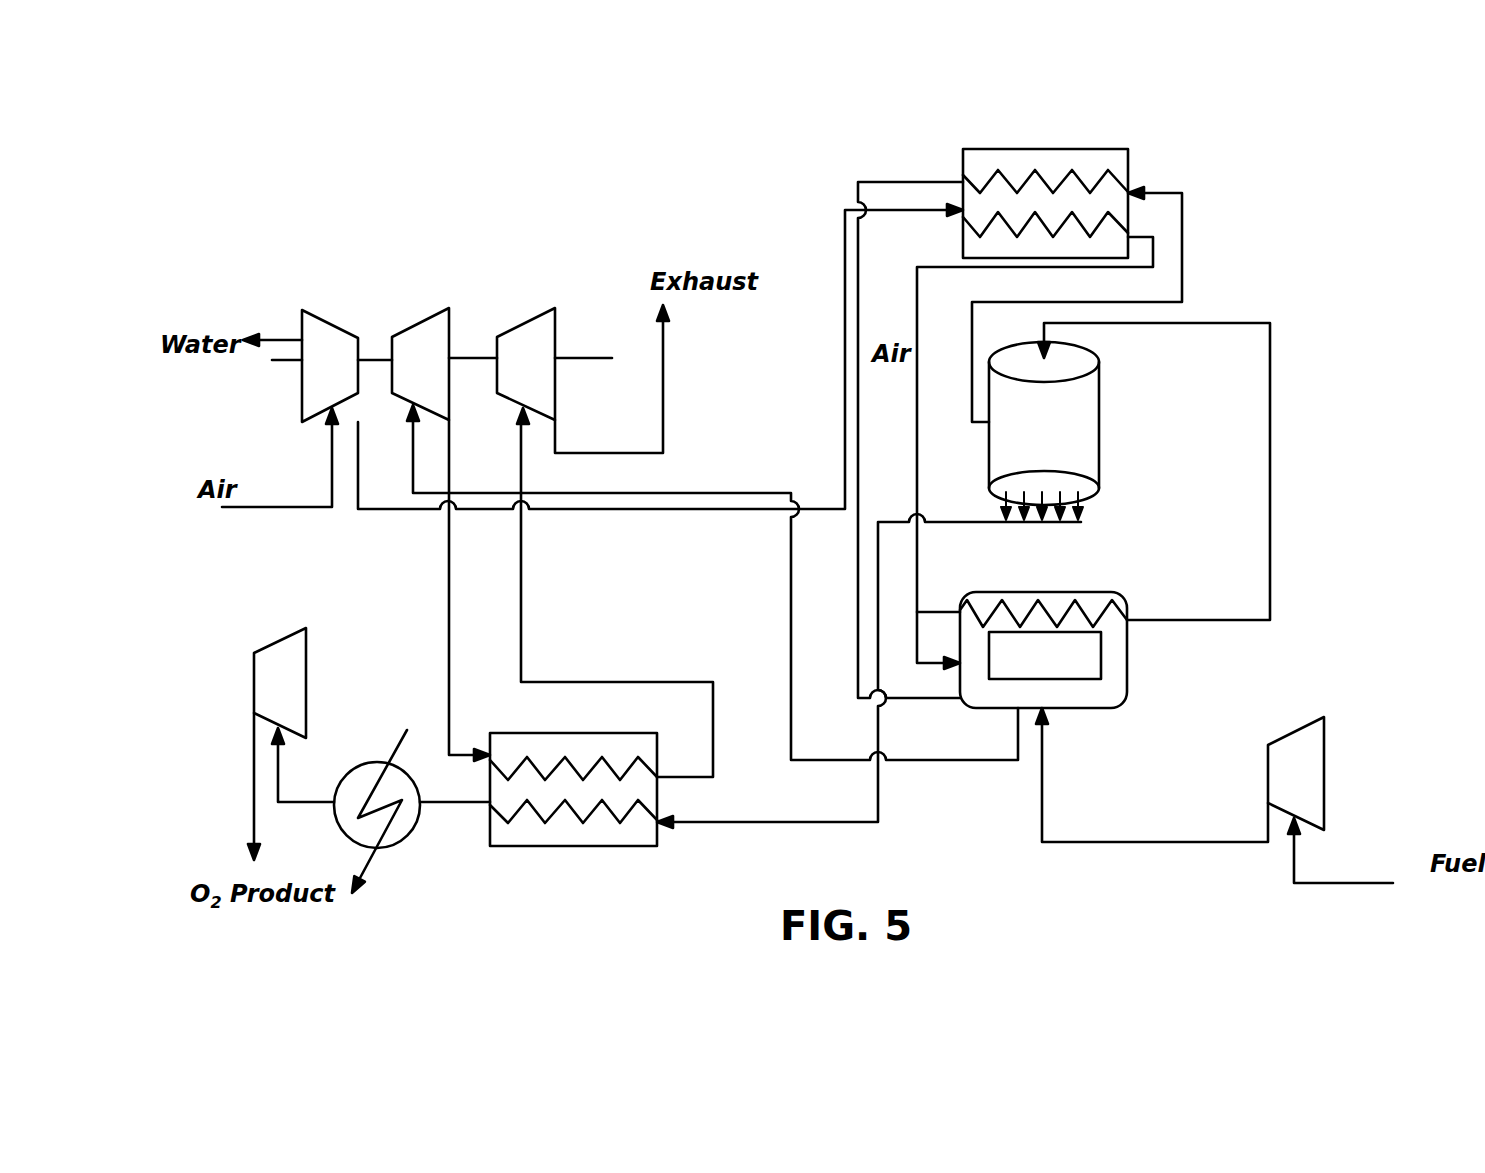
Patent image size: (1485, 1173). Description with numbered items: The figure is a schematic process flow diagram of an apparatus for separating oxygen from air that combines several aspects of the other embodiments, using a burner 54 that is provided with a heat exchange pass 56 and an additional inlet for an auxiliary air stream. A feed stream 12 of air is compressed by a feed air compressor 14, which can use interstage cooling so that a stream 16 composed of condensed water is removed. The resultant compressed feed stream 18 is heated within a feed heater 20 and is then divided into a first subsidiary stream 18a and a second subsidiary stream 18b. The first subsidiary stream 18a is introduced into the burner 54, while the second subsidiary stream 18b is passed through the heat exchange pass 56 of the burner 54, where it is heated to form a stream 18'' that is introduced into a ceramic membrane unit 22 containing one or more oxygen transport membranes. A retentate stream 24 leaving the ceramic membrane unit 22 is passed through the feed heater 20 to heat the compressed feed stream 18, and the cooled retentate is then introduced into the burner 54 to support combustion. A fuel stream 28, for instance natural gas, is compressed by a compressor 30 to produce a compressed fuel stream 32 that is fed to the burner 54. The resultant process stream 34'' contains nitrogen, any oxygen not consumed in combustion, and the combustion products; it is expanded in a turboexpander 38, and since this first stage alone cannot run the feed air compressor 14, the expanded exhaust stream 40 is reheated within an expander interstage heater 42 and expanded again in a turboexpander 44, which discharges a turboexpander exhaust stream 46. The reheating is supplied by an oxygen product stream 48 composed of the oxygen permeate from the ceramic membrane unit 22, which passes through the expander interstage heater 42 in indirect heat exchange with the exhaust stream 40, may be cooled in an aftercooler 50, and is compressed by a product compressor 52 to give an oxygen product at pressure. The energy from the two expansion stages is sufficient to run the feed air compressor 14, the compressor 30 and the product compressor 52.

The feed stream 12 is at (288, 508).
The feed air compressor 14 is at (310, 392).
The stream composed of condensed water 16 is at (283, 338).
The compressed feed stream 18 is at (660, 396).
The first subsidiary stream 18a is at (933, 667).
The second subsidiary stream 18b is at (935, 606).
The stream 18'' is at (1208, 471).
The feed heater 20 is at (988, 262).
The ceramic membrane unit 22 is at (1112, 393).
The retentate stream 24 is at (1182, 275).
The fuel stream 28 is at (1352, 883).
The compressor 30 is at (1308, 770).
The compressed fuel stream 32 is at (1188, 842).
The process stream 34'' is at (712, 582).
The turboexpander 38 is at (428, 333).
The exhaust stream 40 is at (446, 632).
The expander interstage heater 42 is at (490, 828).
The turboexpander 44 is at (542, 333).
The turboexpander exhaust stream 46 is at (663, 383).
The oxygen product stream 48 is at (880, 520).
The aftercooler 50 is at (390, 830).
The product compressor 52 is at (288, 680).
The burner 54 is at (1108, 710).
The heat exchange pass 56 is at (1108, 600).